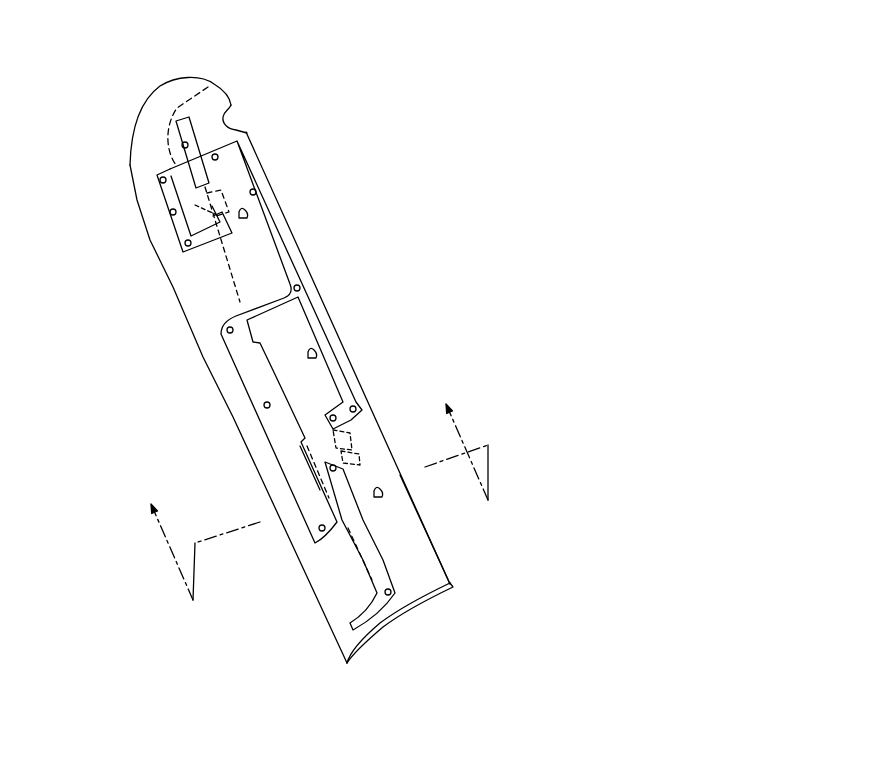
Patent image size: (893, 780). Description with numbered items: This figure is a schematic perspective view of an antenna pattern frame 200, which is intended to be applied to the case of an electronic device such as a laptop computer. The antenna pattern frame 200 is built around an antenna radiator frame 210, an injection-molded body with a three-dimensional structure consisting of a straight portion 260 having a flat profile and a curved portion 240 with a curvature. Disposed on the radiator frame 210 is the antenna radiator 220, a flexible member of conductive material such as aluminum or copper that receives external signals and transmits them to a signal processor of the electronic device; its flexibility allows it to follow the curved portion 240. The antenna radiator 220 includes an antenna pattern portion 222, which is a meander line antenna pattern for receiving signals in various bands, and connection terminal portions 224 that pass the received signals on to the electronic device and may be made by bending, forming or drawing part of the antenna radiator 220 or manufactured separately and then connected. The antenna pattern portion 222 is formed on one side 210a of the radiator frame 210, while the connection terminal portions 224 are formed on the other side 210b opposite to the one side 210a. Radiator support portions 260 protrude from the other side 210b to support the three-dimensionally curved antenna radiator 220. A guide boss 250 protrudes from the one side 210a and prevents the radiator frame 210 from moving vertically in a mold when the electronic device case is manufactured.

The antenna pattern frame 200 is at (466, 110).
The antenna radiator frame 210 is at (69, 252).
The one side of the radiator frame 210a is at (427, 560).
The other side of the radiator frame 210b is at (397, 617).
The antenna radiator 220 is at (231, 371).
The antenna pattern portion 222 is at (292, 461).
The connection terminal portions 224 is at (200, 191).
The curved portion 240 is at (202, 318).
The guide boss 250 is at (319, 351).
The straight portion 260 is at (240, 268).